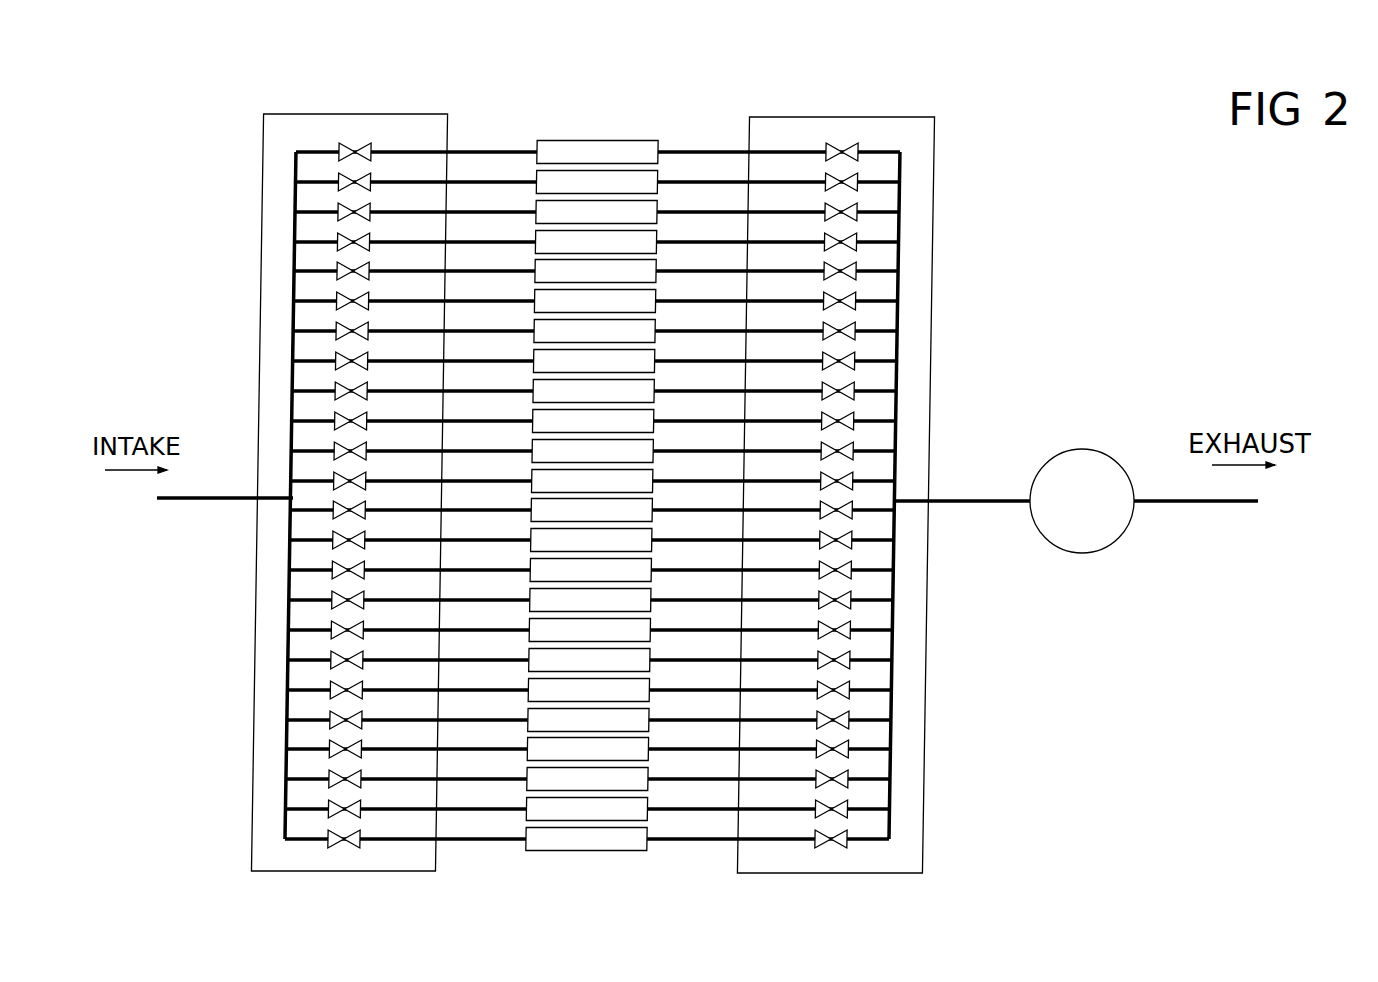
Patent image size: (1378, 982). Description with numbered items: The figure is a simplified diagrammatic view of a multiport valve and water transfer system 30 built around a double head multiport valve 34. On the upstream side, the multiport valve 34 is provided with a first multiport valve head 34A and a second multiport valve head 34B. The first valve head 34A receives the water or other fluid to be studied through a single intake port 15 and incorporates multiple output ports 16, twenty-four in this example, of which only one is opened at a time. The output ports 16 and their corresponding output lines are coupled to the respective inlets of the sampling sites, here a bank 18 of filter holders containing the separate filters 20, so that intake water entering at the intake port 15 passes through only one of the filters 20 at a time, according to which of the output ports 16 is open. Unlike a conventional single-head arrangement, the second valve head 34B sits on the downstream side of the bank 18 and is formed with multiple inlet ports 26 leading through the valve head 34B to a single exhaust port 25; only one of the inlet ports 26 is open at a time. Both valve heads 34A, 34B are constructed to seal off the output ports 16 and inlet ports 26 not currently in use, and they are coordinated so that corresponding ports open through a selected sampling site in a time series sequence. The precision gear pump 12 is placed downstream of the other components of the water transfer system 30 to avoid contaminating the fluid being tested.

The precision gear pump 12 is at (1095, 448).
The intake port 15 is at (225, 500).
The output ports 16 is at (482, 152).
The bank of filter holders 18 is at (619, 117).
The filters 20 is at (597, 152).
The exhaust port 25 is at (957, 500).
The inlet ports 26 is at (712, 152).
The multiport valve and water transfer system 30 is at (1146, 240).
The multiport valve 34 is at (242, 158).
The first multiport valve head 34A is at (317, 115).
The second multiport valve head 34B is at (935, 215).